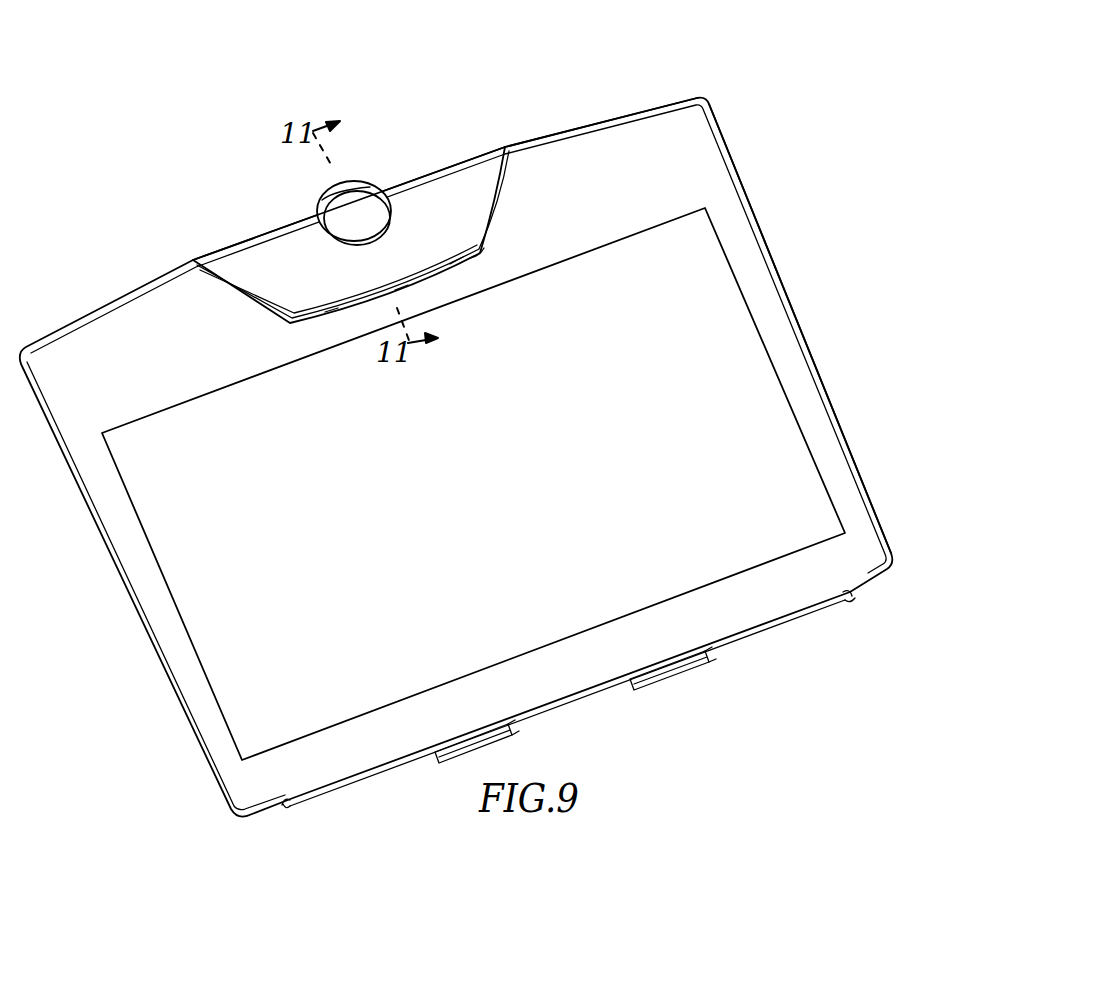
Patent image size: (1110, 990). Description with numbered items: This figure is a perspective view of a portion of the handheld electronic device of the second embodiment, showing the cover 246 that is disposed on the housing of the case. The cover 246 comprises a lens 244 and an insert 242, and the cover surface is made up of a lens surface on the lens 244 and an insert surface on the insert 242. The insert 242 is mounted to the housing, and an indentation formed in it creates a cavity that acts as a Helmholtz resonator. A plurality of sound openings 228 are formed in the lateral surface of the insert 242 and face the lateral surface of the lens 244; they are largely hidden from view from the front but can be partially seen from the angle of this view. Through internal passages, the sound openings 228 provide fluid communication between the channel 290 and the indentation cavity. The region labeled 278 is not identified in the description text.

The insert 242 is at (427, 163).
The cover 246 is at (582, 118).
The lens 244 is at (722, 120).
The camera recess 278 is at (248, 255).
The sound openings 228 is at (453, 257).
The channel 290 is at (487, 252).